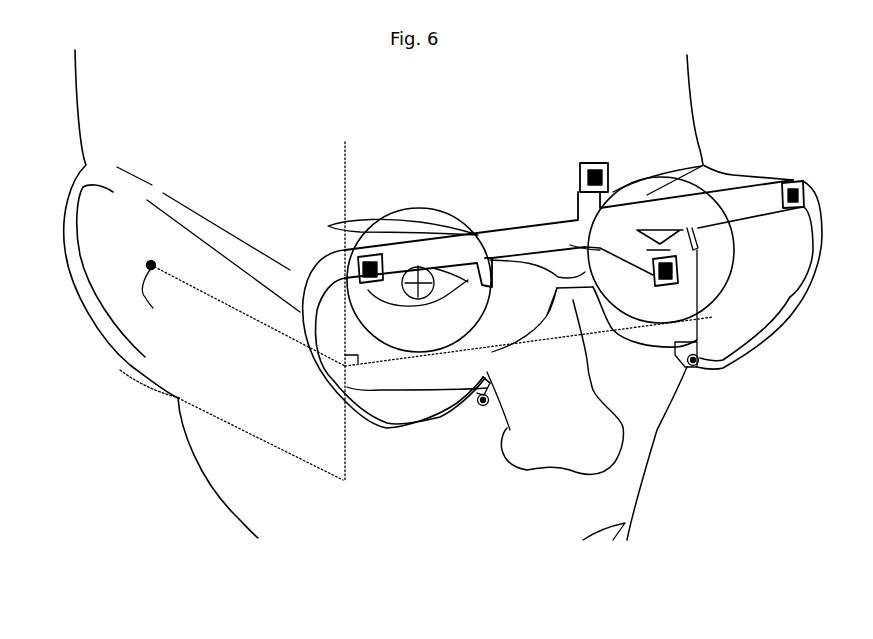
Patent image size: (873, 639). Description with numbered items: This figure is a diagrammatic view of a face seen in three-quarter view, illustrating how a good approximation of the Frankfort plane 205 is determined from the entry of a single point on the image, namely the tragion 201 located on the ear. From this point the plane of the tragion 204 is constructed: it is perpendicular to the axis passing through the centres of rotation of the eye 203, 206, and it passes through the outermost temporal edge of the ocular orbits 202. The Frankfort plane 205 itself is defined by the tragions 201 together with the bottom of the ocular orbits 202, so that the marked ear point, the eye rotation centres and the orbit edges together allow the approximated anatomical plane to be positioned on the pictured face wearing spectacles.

The tragion 201 is at (151, 262).
The ocular orbit 202 is at (405, 210).
The centre of rotation of the eye 203 is at (418, 282).
The plane of the tragion 204 is at (343, 482).
The Frankfort plane 205 is at (489, 376).
The centre of rotation of the eye 206 is at (660, 249).